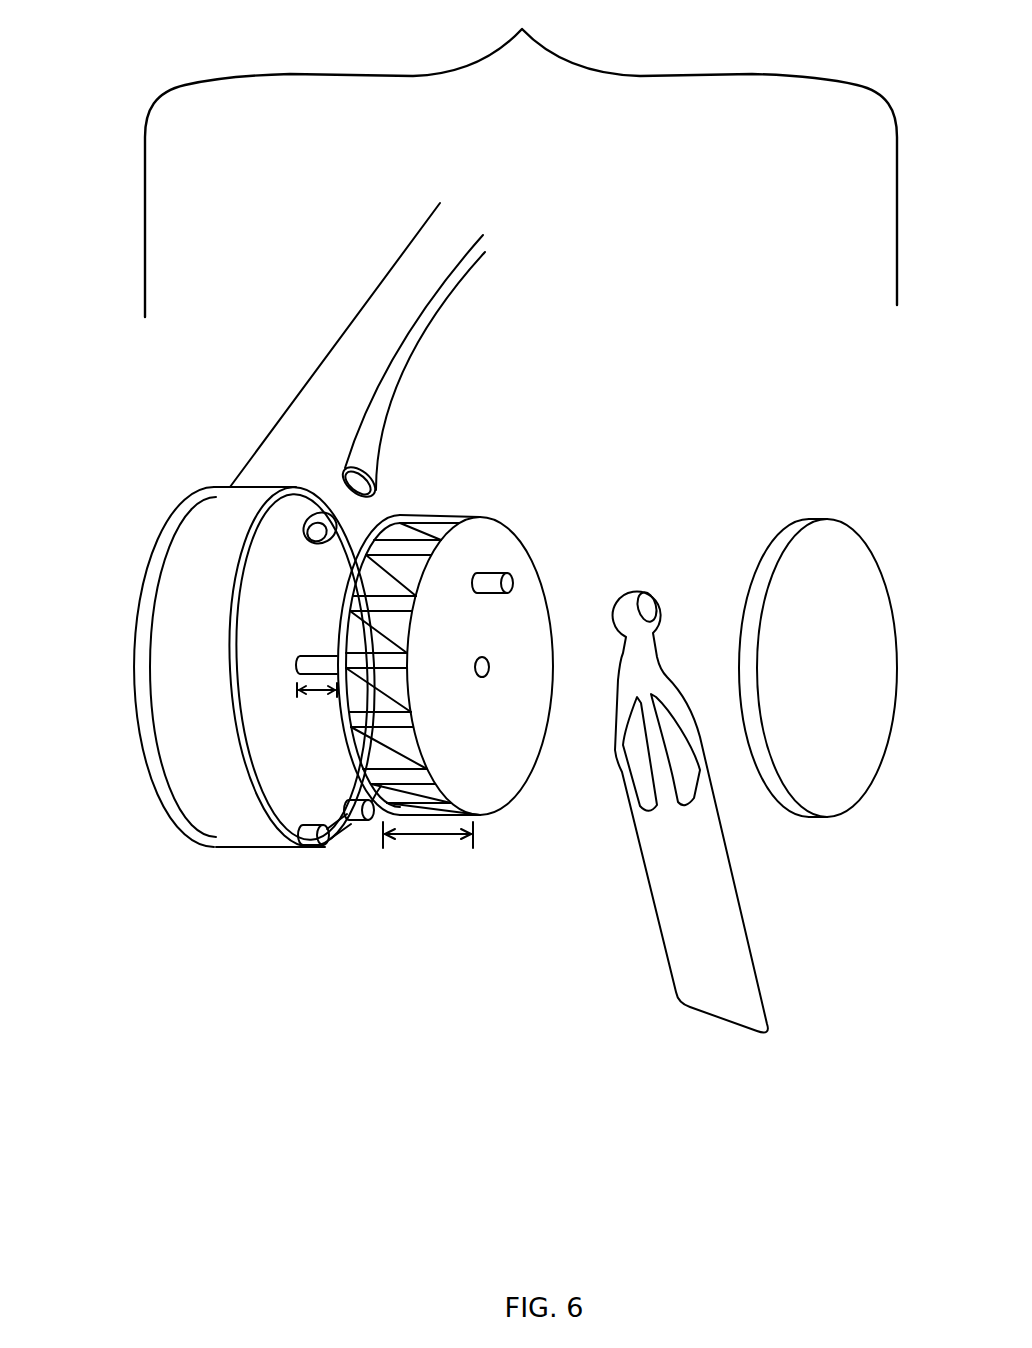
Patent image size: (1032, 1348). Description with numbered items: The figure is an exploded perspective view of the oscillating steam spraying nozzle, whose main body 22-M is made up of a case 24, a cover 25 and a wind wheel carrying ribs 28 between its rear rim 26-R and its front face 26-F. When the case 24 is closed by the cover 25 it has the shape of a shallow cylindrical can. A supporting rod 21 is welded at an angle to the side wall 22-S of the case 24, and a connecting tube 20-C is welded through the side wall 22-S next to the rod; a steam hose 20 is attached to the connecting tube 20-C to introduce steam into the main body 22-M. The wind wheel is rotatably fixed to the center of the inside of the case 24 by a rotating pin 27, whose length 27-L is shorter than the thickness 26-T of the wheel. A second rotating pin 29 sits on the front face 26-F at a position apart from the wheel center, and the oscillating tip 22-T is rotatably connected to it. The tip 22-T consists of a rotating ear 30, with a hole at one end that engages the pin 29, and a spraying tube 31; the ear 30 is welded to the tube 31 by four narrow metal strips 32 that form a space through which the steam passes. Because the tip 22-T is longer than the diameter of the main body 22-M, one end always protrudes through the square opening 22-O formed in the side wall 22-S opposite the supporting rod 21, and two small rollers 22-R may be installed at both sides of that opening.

The main body 22-M is at (521, 158).
The supporting rod 21 is at (413, 265).
The steam hose 20 is at (427, 396).
The connecting tube 20-C is at (337, 483).
The side wall 22-S is at (175, 697).
The case 24 is at (259, 504).
The rotating pin 27 is at (312, 665).
The length of the rotating pin 27-L is at (318, 697).
The small rollers 22-R is at (322, 848).
The square opening 22-O is at (374, 822).
The wind wheel rear rim 26-R is at (388, 522).
The ribs 28 is at (437, 516).
The front face of the wind wheel 26-F is at (505, 780).
The second rotating pin 29 is at (508, 583).
The thickness of the wind wheel 26-T is at (428, 846).
The oscillating tip 22-T is at (704, 811).
The spraying tube 31 is at (712, 913).
The rotating ear 30 is at (655, 598).
The narrow metal strips 32 is at (685, 702).
The cover 25 is at (842, 593).